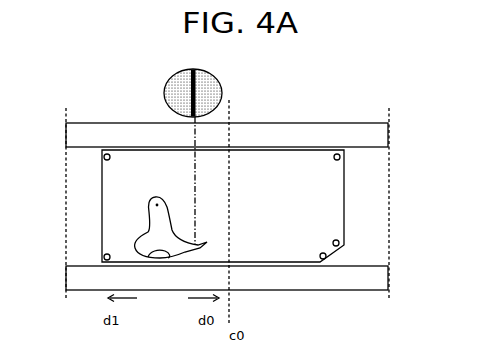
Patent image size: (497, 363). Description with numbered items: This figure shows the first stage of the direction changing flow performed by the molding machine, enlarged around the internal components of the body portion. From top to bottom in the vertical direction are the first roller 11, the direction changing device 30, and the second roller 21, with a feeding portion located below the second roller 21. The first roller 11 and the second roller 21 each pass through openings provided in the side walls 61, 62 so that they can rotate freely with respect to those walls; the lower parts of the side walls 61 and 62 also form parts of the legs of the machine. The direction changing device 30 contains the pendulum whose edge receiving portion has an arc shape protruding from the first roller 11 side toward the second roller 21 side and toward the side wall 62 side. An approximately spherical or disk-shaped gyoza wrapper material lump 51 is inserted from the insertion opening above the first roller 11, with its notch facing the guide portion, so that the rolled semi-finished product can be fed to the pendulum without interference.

The first roller 11 is at (388, 137).
The second roller 21 is at (389, 278).
The direction changing device 30 is at (344, 207).
The gyoza wrapper material lump 51 is at (219, 83).
The side wall 61 is at (390, 250).
The side wall 62 is at (64, 246).